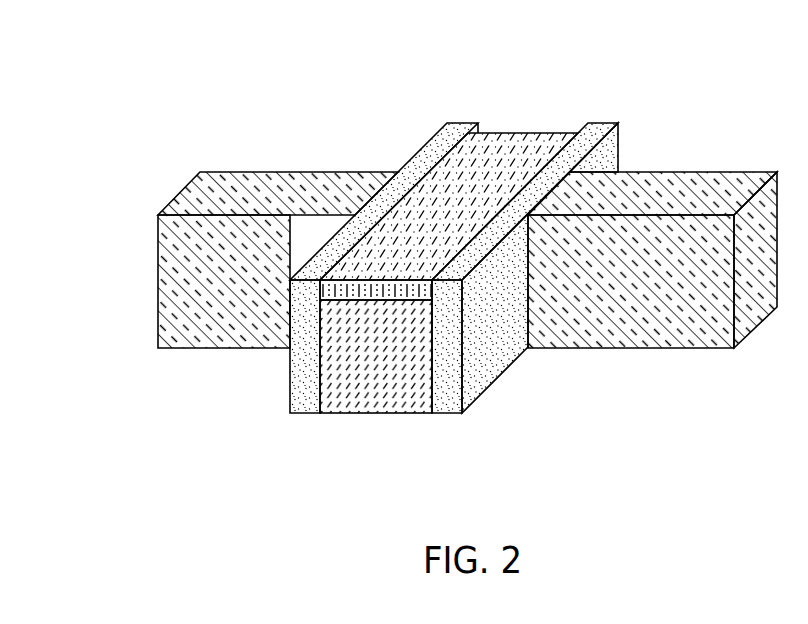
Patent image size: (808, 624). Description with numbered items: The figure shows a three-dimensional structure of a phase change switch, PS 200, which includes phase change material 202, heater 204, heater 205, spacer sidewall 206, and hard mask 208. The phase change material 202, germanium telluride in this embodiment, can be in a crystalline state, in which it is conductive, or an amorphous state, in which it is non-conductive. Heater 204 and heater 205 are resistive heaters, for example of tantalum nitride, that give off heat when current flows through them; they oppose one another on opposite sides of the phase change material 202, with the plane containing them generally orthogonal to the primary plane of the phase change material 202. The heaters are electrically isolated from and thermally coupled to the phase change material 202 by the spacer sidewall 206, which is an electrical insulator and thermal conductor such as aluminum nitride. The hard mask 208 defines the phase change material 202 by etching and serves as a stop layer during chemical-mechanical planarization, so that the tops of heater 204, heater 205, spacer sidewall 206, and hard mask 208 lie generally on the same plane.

The PS 200 is at (240, 75).
The phase change material 202 is at (357, 400).
The heater 204 is at (188, 340).
The heater 205 is at (619, 342).
The spacer sidewall 206 is at (448, 400).
The hard mask 208 is at (520, 145).